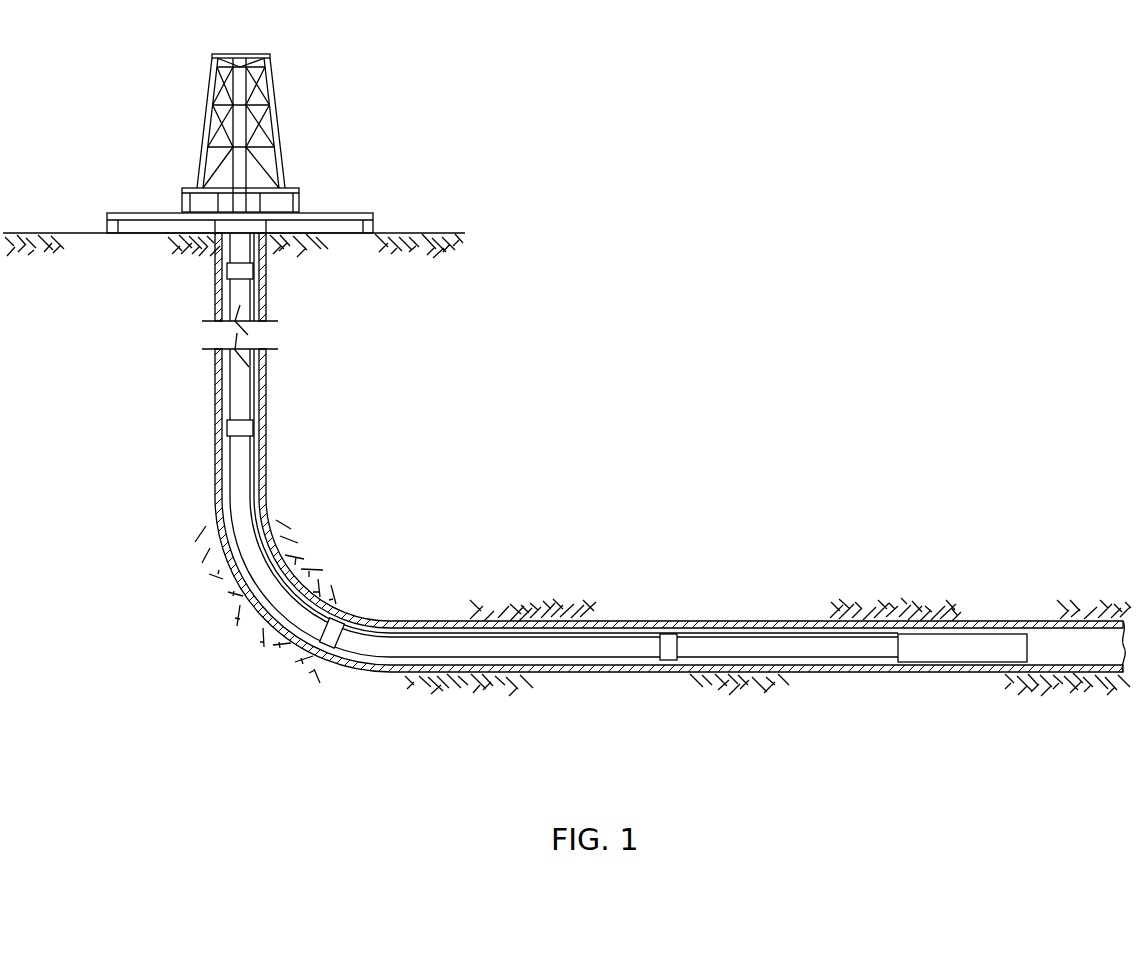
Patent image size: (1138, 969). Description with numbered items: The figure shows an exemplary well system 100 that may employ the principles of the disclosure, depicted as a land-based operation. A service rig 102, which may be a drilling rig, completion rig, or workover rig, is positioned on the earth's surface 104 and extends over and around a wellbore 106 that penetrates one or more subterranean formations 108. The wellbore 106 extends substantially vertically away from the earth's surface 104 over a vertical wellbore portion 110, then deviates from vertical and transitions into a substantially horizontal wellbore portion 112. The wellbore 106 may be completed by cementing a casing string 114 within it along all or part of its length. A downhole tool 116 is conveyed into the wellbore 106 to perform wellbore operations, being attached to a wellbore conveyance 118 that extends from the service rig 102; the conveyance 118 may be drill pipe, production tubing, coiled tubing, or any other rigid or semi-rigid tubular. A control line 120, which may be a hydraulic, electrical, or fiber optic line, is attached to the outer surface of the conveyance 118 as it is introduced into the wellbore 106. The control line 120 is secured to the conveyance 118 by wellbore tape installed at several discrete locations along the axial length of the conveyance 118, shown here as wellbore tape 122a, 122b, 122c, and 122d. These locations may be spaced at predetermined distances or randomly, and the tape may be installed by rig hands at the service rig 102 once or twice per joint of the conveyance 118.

The well system 100 is at (592, 248).
The service rig 102 is at (296, 91).
The earth's surface 104 is at (425, 233).
The wellbore 106 is at (281, 427).
The subterranean formation 108 is at (418, 588).
The vertical wellbore portion 110 is at (215, 397).
The horizontal wellbore portion 112 is at (990, 621).
The casing string 114 is at (263, 372).
The downhole tool 116 is at (970, 660).
The wellbore conveyance 118 is at (230, 467).
The control line 120 is at (255, 466).
The wellbore tape 122a is at (224, 283).
The wellbore tape 122b is at (227, 432).
The wellbore tape 122c is at (325, 645).
The wellbore tape 122d is at (663, 663).